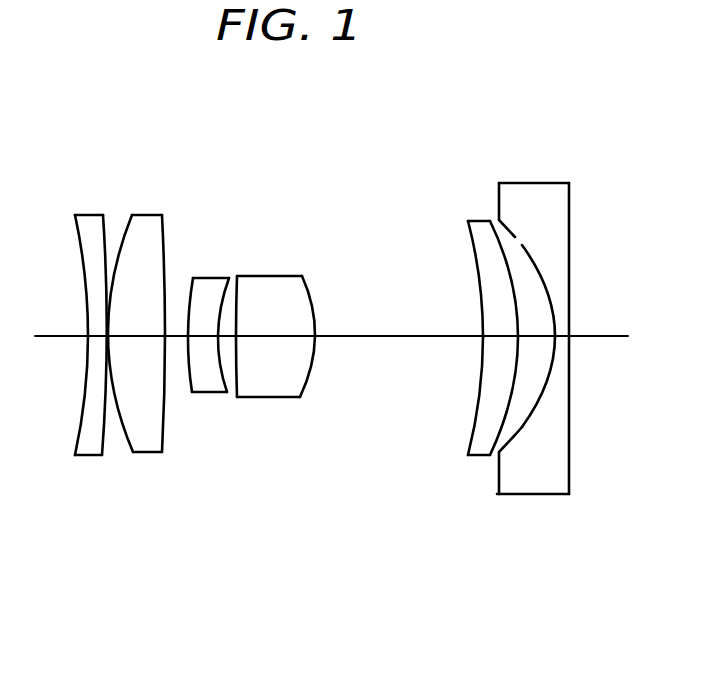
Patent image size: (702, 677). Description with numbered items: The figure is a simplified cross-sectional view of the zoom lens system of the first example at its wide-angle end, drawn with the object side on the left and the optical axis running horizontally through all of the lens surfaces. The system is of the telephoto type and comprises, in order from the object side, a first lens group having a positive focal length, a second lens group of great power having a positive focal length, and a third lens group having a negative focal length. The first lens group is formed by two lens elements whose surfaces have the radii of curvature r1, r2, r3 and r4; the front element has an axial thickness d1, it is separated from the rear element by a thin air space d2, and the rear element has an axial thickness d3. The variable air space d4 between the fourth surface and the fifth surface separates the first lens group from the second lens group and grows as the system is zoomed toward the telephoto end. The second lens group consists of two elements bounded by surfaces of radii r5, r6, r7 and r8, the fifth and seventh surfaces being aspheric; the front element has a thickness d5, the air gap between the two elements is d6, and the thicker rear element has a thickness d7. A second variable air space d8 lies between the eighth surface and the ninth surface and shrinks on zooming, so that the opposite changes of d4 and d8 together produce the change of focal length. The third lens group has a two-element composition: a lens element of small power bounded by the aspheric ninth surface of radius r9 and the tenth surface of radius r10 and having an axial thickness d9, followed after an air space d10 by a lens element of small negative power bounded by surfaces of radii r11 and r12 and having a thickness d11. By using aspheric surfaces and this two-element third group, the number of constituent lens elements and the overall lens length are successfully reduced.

The radius of curvature of first surface r1 is at (75, 215).
The radius of curvature of second surface r2 is at (103, 215).
The radius of curvature of third surface r3 is at (133, 215).
The radius of curvature of fourth surface r4 is at (162, 215).
The radius of curvature of fifth surface r5 is at (193, 278).
The radius of curvature of sixth surface r6 is at (229, 278).
The radius of curvature of seventh surface r7 is at (237, 276).
The radius of curvature of eighth surface r8 is at (302, 276).
The radius of curvature of ninth surface r9 is at (468, 221).
The radius of curvature of tenth surface r10 is at (490, 221).
The radius of curvature of eleventh surface r11 is at (500, 183).
The radius of curvature of twelfth surface r12 is at (569, 183).
The axial thickness of first lens element d1 is at (96, 337).
The air space between first and second lens elements d2 is at (109, 337).
The axial thickness of second lens element d3 is at (137, 337).
The variable air space between first and second lens groups d4 is at (177, 337).
The axial thickness of third lens element d5 is at (203, 337).
The air space between third and fourth lens elements d6 is at (228, 337).
The axial thickness of fourth lens element d7 is at (276, 337).
The variable air space between second and third lens groups d8 is at (388, 337).
The axial thickness of lens element 3a d9 is at (500, 337).
The air space between lens elements 3a and 3b d10 is at (531, 337).
The axial thickness of lens element 3b d11 is at (563, 337).